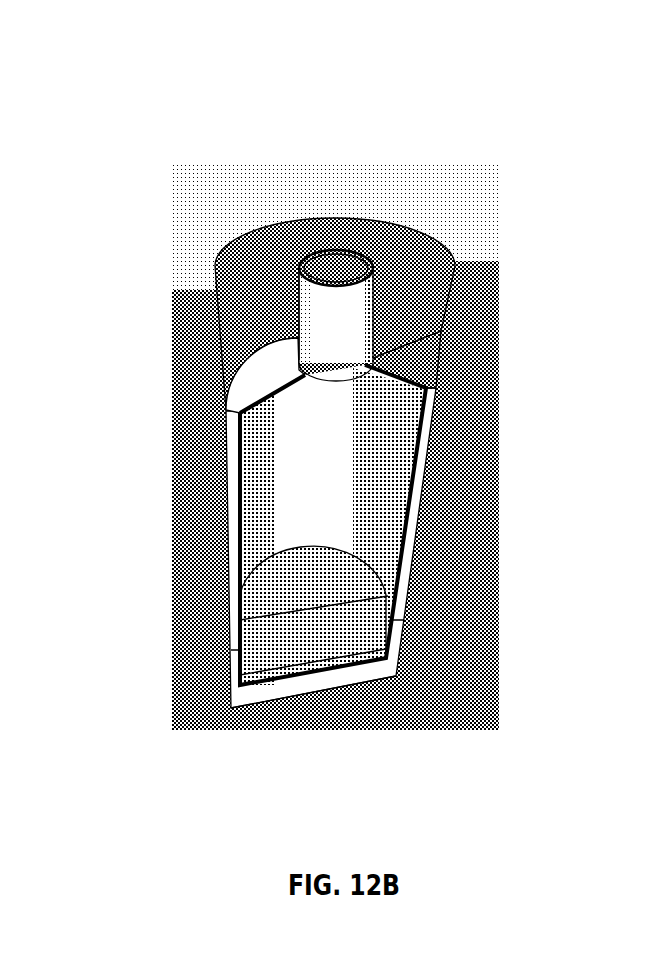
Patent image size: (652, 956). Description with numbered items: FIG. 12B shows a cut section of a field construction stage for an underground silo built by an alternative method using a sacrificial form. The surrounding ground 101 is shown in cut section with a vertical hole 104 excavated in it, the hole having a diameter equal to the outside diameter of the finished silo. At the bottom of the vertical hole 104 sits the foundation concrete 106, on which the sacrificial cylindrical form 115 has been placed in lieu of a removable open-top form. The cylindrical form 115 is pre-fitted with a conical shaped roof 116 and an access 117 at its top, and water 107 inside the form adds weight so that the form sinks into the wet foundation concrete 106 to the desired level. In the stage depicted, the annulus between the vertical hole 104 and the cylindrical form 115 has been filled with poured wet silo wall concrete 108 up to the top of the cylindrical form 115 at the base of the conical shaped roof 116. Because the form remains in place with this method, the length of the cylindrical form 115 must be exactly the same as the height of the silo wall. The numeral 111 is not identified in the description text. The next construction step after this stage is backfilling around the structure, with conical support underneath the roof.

The ground 101 is at (202, 525).
The vertical hole 104 is at (407, 260).
The foundation concrete 106 is at (328, 680).
The water 107 is at (327, 599).
The silo wall concrete 108 is at (417, 438).
The neck cylinder 111 is at (337, 253).
The sacrificial cylindrical form 115 is at (363, 540).
The conical shaped roof 116 is at (370, 350).
The access 117 is at (310, 302).